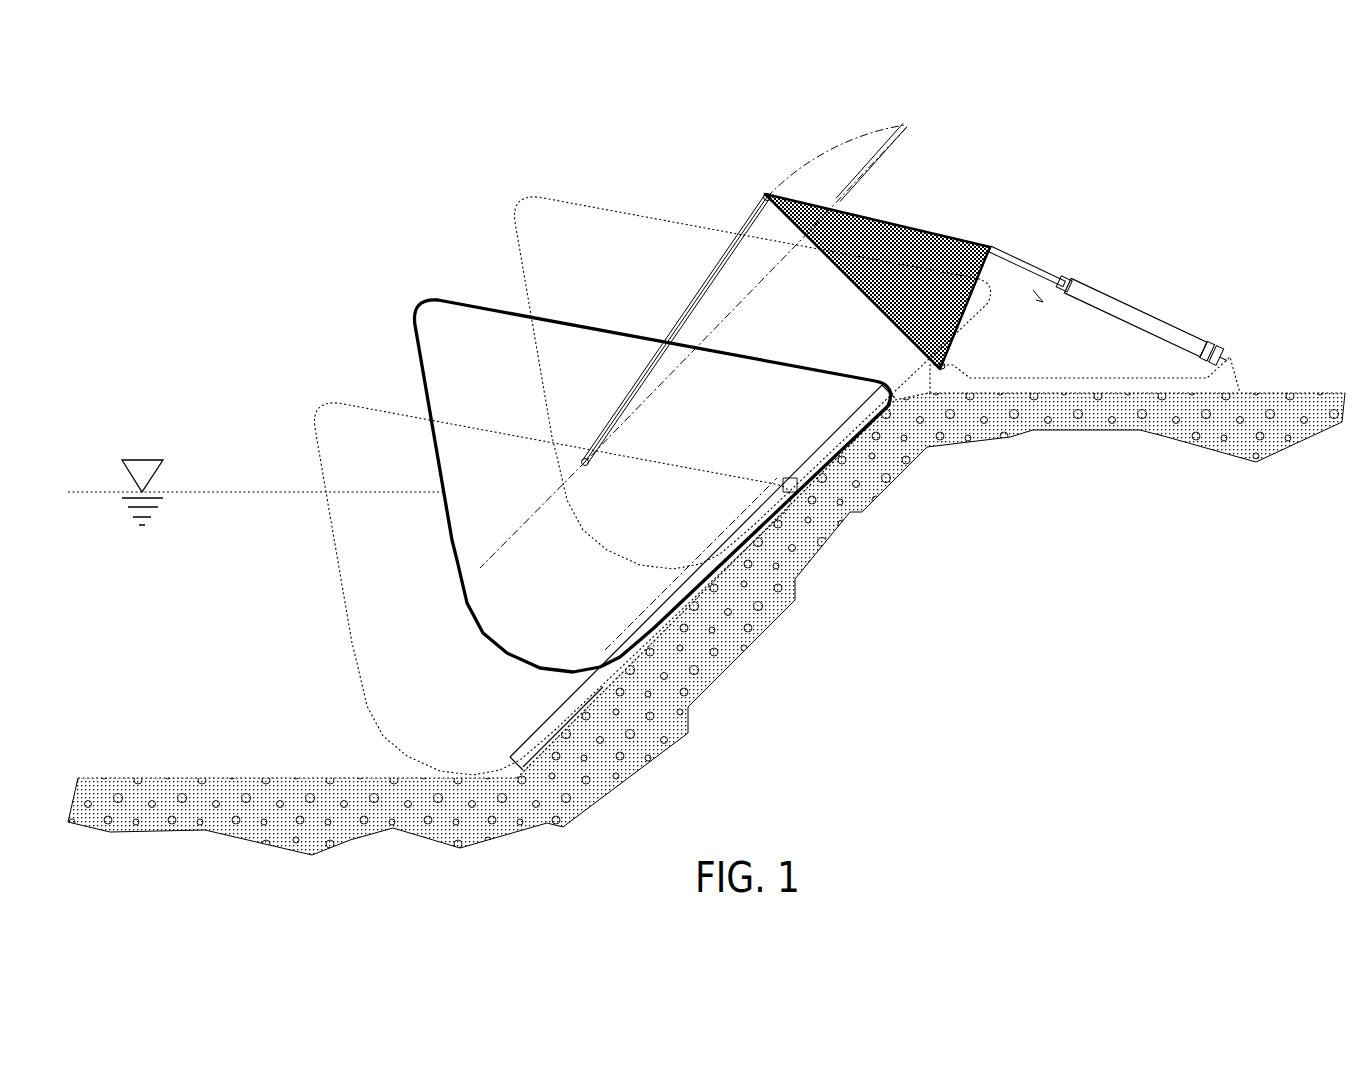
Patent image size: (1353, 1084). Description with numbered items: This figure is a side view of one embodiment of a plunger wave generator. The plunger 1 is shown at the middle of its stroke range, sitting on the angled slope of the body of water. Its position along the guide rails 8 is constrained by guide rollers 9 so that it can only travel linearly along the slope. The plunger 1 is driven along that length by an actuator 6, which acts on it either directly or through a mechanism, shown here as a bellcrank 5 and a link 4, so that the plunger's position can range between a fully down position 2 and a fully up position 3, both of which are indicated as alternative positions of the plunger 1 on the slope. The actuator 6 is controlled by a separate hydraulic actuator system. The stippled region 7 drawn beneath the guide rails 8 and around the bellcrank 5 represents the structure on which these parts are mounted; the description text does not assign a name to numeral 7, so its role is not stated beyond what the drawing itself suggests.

The plunger 1 is at (455, 295).
The fully down position 2 is at (368, 403).
The fully up position 3 is at (603, 207).
The link 4 is at (700, 290).
The bellcrank 5 is at (877, 217).
The actuator 6 is at (1100, 305).
The concrete foundation 7 is at (920, 463).
The guide rails 8 is at (830, 490).
The guide rollers 9 is at (605, 662).